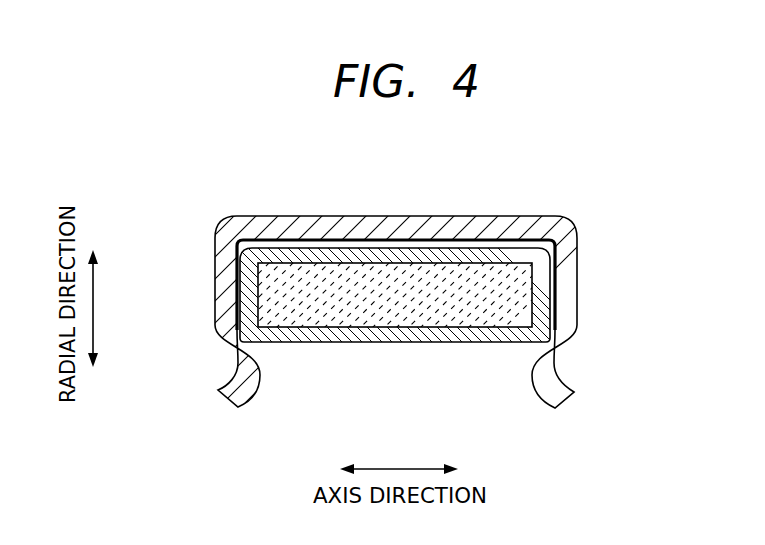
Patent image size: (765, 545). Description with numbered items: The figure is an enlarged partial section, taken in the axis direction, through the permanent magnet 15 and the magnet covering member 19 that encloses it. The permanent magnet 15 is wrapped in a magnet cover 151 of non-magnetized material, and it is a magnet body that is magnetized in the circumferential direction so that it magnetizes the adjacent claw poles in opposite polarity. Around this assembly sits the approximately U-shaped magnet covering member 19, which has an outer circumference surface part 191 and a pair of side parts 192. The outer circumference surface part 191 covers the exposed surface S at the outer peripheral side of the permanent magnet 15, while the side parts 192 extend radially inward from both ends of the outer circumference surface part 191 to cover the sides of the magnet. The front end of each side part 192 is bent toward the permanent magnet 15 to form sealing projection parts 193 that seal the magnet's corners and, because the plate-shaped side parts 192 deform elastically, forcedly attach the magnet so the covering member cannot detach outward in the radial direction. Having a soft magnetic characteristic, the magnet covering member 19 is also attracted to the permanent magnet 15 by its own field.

The magnet covering member 19 is at (427, 210).
The outer circumference surface part 191 is at (505, 216).
The side parts 192 is at (215, 282).
The sealing projection parts 193 is at (242, 360).
The permanent magnet 15 is at (323, 300).
The magnet cover 151 is at (407, 343).
The exposed surface S is at (366, 247).